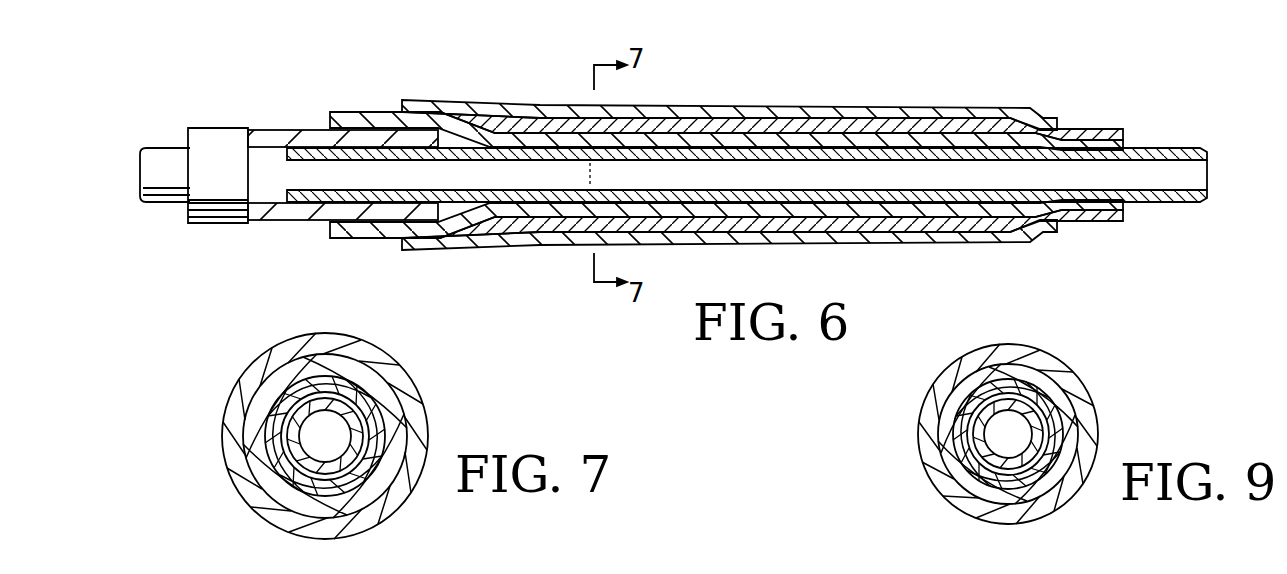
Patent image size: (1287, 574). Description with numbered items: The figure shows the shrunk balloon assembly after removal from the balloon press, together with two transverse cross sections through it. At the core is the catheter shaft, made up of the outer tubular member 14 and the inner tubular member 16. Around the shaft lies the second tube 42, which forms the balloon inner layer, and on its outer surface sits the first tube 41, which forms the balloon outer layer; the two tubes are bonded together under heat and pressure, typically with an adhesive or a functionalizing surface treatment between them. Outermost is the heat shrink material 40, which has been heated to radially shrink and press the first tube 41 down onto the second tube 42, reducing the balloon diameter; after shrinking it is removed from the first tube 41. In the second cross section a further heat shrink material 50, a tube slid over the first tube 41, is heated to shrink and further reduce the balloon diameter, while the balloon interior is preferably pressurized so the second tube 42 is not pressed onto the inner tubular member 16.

In FIG. 6, the outer tubular member 14 is at (297, 135).
In FIG. 6, the inner tubular member 16 is at (380, 154).
In FIG. 7, the inner tubular member 16 is at (357, 430).
In FIG. 9, the inner tubular member 16 is at (1040, 427).
In FIG. 6, the heat shrink material 40 is at (965, 113).
In FIG. 7, the heat shrink material 40 is at (258, 375).
In FIG. 6, the first tube 41 is at (833, 127).
In FIG. 7, the first tube 41 is at (252, 420).
In FIG. 9, the first tube 41 is at (950, 417).
In FIG. 6, the second tube 42 is at (690, 137).
In FIG. 7, the second tube 42 is at (278, 463).
In FIG. 9, the second tube 42 is at (962, 458).
In FIG. 9, the heat shrink material 50 is at (952, 372).